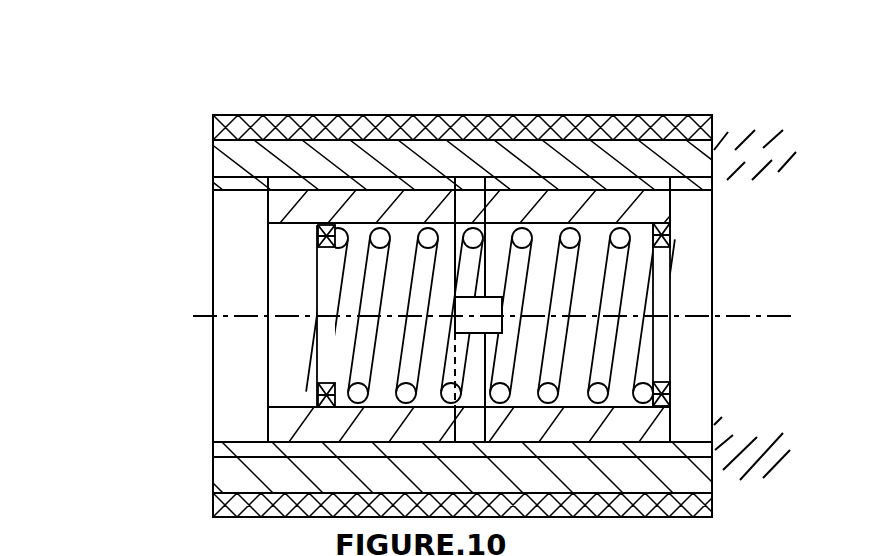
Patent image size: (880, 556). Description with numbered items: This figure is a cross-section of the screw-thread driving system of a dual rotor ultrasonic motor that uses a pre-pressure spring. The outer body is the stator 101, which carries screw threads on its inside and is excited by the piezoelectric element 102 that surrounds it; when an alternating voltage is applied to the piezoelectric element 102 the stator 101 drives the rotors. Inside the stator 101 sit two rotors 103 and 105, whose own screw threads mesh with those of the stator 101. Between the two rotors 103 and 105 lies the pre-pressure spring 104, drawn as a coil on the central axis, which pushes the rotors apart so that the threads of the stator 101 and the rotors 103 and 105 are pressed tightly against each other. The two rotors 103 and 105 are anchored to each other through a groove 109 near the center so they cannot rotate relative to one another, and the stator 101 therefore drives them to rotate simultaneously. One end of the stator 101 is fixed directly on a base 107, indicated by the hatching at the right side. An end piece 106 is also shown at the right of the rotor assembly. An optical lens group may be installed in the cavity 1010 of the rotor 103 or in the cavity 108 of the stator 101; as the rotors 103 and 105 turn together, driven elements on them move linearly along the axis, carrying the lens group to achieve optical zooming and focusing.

The stator 101 is at (258, 163).
The piezoelectric element 102 is at (304, 132).
The rotor 103 is at (387, 207).
The pre-pressure spring 104 is at (468, 214).
The rotor 105 is at (548, 202).
The end plate with seal rings 106 is at (659, 228).
The base 107 is at (731, 135).
The cavity of the stator 108 is at (247, 398).
The groove 109 is at (455, 310).
The cavity of the rotor 1010 is at (287, 241).